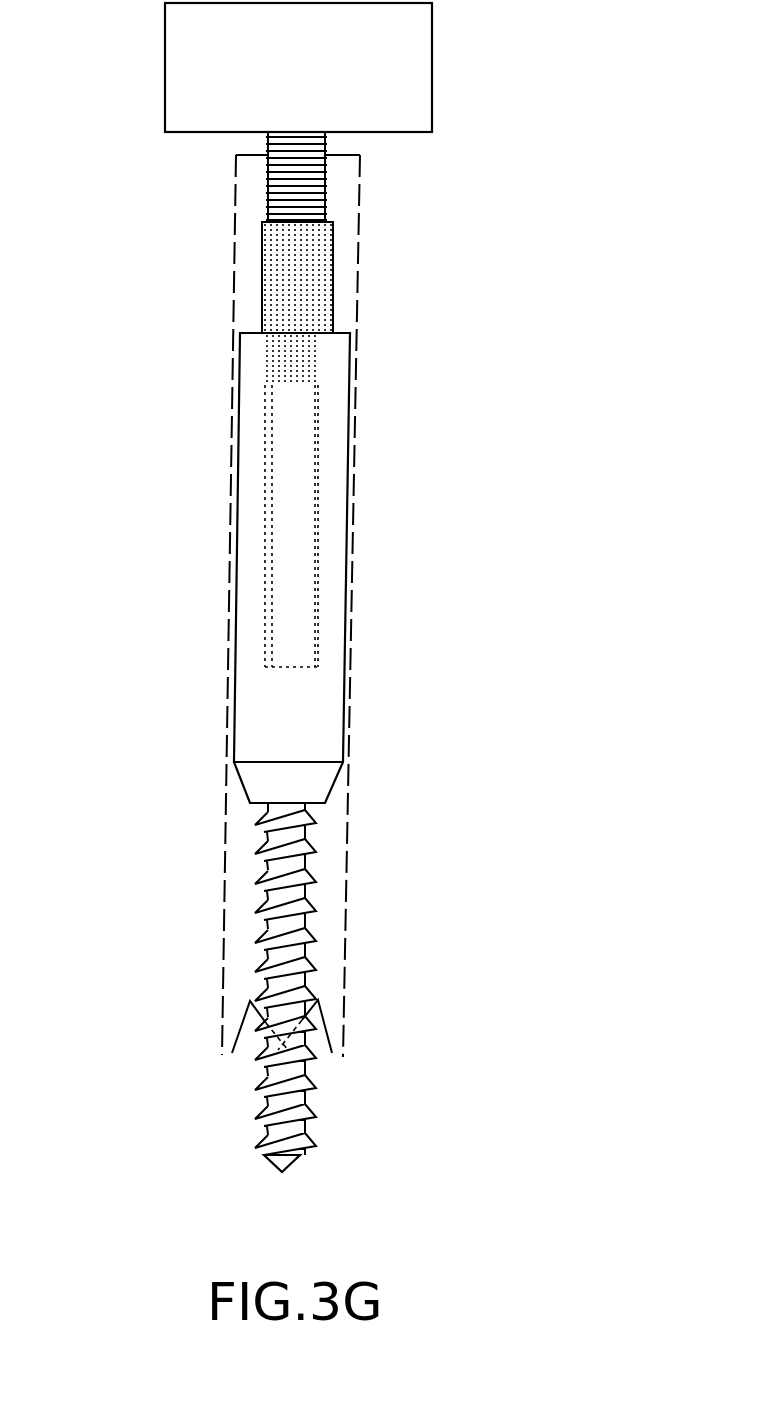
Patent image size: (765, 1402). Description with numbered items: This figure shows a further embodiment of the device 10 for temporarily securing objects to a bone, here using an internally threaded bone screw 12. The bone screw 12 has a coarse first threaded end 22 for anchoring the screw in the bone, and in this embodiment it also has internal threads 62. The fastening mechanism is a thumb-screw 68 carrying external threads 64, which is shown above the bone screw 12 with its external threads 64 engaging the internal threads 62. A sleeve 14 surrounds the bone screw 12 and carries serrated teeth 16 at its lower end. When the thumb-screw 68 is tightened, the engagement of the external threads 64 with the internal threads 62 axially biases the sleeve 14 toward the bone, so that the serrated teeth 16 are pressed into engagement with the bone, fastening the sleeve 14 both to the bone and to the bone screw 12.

The device 10 is at (334, 613).
The bone screw 12 is at (302, 1168).
The sleeve 14 is at (348, 918).
The serrated teeth 16 is at (238, 1070).
The first threaded end 22 is at (347, 1112).
The internal threads 62 is at (290, 510).
The external threads 64 is at (268, 196).
The thumb-screw 68 is at (160, 85).